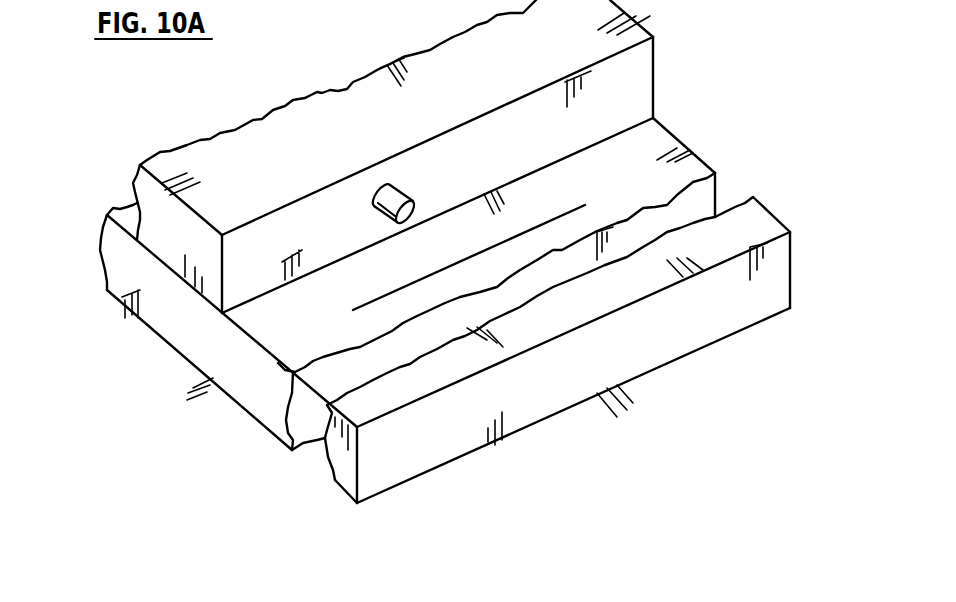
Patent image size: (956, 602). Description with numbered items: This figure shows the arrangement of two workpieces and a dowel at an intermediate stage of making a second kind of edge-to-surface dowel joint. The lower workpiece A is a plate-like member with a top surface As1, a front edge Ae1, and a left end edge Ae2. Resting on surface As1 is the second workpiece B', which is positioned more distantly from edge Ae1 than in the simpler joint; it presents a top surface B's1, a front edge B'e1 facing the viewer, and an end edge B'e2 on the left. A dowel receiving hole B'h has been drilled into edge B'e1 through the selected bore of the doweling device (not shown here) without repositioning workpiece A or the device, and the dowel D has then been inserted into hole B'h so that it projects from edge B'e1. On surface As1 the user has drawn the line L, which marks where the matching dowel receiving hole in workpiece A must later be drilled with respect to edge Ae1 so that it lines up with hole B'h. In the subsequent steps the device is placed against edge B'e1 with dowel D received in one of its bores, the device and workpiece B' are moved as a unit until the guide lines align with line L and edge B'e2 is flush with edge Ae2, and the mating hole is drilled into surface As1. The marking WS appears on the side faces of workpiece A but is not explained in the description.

The workpiece B' is at (379, 156).
The surface of workpiece B' B's1 is at (396, 117).
The edge of workpiece B' B'e1 is at (481, 169).
The edge of workpiece B' B'e2 is at (110, 221).
The dowel receiving hole B'h is at (352, 186).
The dowel D is at (398, 188).
The workpiece A is at (370, 297).
The surface of workpiece A As1 is at (752, 230).
The edge of workpiece A Ae1 is at (668, 332).
The edge of workpiece A Ae2 is at (170, 327).
The line L is at (560, 210).
The side wall surface WS is at (182, 419).